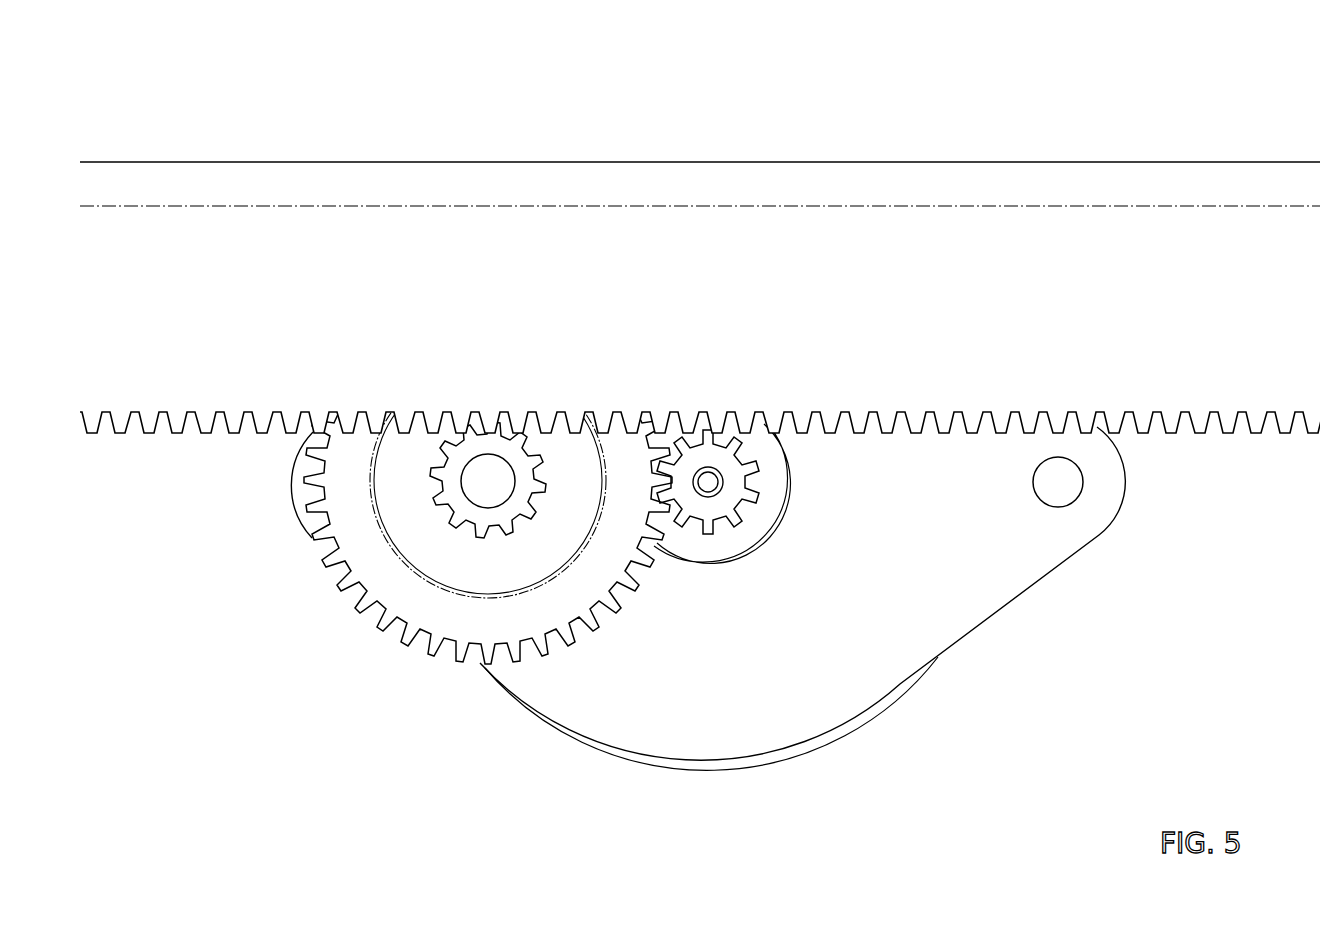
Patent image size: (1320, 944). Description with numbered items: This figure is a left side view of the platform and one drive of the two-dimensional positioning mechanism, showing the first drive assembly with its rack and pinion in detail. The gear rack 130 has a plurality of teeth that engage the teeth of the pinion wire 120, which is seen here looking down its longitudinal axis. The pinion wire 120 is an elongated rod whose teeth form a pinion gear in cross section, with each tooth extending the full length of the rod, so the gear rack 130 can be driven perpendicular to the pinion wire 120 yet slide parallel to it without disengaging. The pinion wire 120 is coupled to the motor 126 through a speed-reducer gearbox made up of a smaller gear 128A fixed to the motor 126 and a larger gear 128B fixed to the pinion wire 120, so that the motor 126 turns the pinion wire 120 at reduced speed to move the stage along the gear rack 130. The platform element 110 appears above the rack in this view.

The support rail 110 is at (676, 160).
The pinion wire 120 is at (466, 527).
The motor 126 is at (748, 717).
The smaller gear 128A is at (731, 525).
The larger gear 128B is at (633, 575).
The gear rack 130 is at (1199, 441).